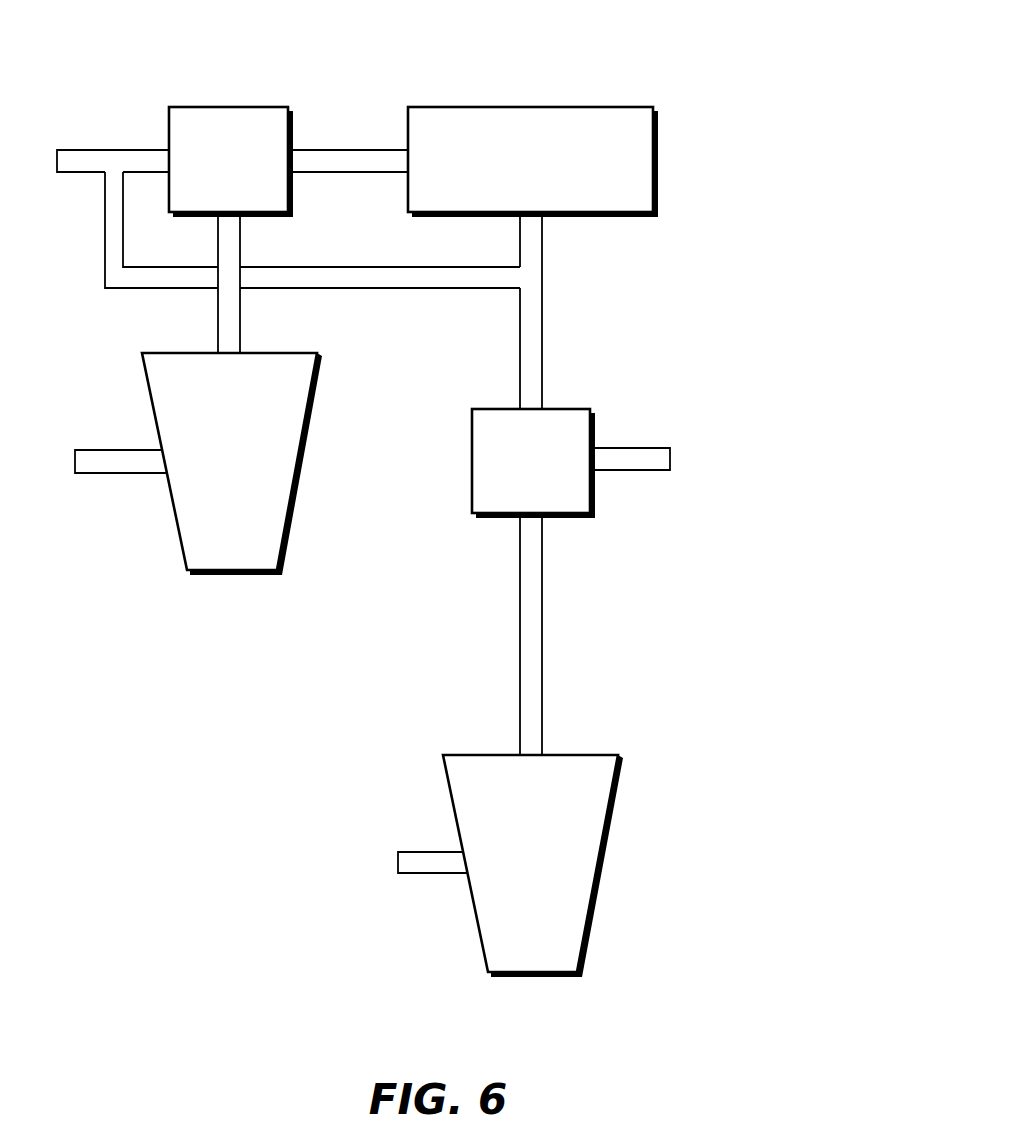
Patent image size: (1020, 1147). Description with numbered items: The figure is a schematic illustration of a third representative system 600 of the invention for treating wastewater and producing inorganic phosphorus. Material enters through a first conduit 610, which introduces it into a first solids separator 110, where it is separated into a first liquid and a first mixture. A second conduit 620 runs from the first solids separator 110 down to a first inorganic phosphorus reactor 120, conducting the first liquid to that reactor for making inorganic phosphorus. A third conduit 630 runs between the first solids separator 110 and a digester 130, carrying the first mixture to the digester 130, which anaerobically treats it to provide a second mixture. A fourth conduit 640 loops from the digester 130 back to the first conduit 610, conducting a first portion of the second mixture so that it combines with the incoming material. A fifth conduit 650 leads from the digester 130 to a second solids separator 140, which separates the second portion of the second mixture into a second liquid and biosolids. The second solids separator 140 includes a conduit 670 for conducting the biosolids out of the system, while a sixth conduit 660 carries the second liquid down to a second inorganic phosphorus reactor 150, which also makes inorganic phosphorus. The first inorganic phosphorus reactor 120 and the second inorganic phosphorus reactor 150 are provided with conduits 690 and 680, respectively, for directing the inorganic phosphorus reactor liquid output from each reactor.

The system 600 is at (731, 84).
The first solids separator 110 is at (231, 162).
The digester 130 is at (533, 162).
The second solids separator 140 is at (533, 463).
The first inorganic phosphorus reactor 120 is at (232, 464).
The second inorganic phosphorus reactor 150 is at (533, 866).
The first conduit 610 is at (133, 150).
The second conduit 620 is at (240, 240).
The third conduit 630 is at (352, 150).
The fourth conduit 640 is at (327, 290).
The fifth conduit 650 is at (542, 300).
The sixth conduit 660 is at (542, 647).
The conduit 670 is at (633, 455).
The conduit 680 is at (412, 850).
The conduit 690 is at (108, 450).